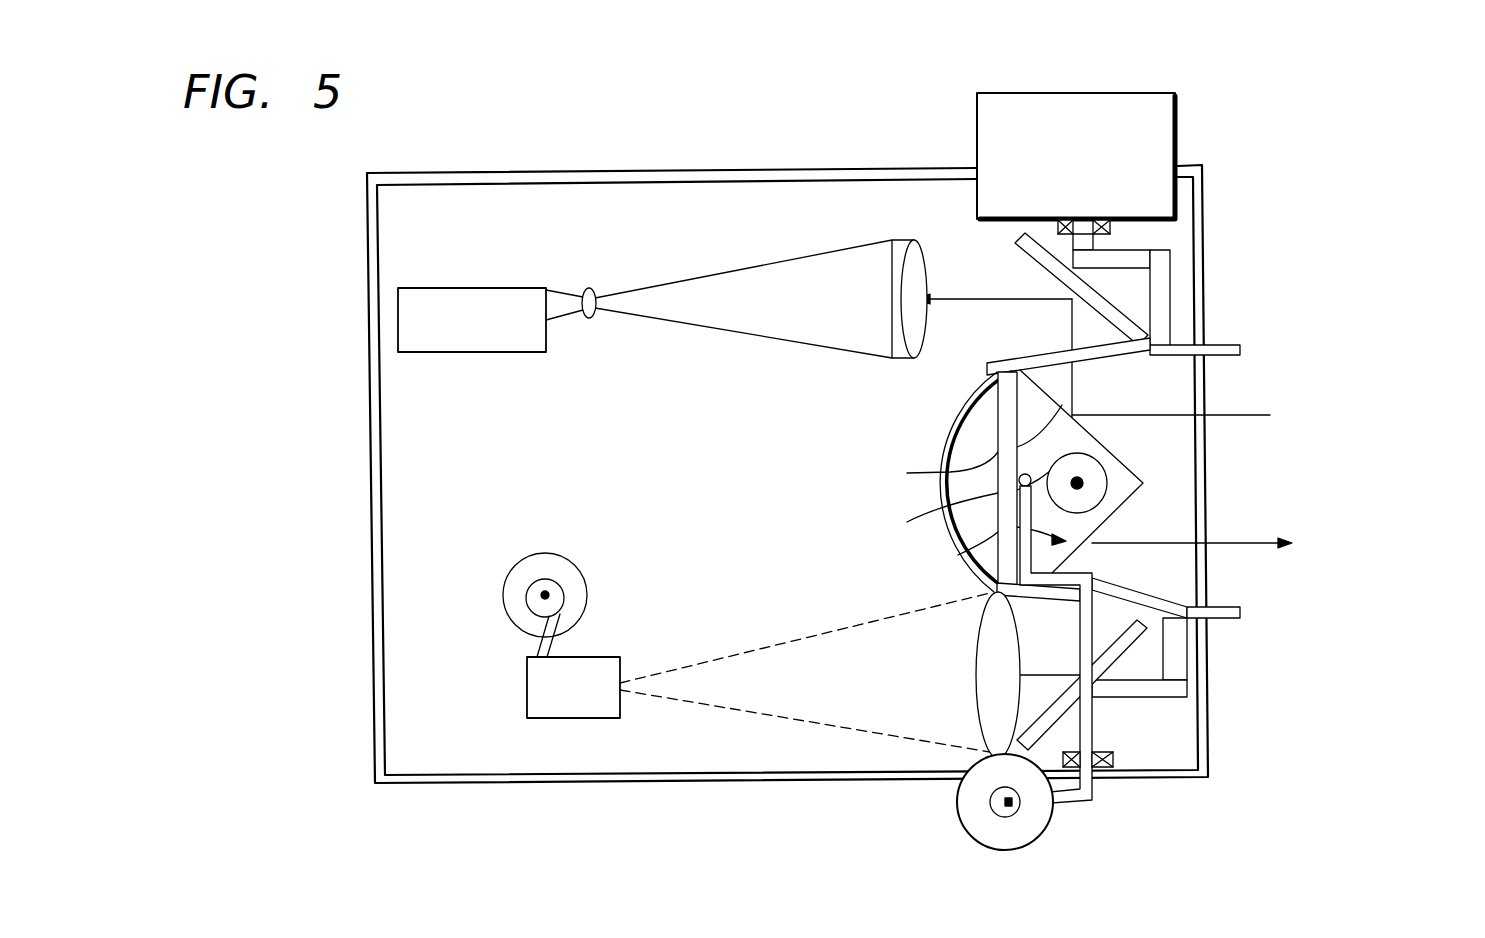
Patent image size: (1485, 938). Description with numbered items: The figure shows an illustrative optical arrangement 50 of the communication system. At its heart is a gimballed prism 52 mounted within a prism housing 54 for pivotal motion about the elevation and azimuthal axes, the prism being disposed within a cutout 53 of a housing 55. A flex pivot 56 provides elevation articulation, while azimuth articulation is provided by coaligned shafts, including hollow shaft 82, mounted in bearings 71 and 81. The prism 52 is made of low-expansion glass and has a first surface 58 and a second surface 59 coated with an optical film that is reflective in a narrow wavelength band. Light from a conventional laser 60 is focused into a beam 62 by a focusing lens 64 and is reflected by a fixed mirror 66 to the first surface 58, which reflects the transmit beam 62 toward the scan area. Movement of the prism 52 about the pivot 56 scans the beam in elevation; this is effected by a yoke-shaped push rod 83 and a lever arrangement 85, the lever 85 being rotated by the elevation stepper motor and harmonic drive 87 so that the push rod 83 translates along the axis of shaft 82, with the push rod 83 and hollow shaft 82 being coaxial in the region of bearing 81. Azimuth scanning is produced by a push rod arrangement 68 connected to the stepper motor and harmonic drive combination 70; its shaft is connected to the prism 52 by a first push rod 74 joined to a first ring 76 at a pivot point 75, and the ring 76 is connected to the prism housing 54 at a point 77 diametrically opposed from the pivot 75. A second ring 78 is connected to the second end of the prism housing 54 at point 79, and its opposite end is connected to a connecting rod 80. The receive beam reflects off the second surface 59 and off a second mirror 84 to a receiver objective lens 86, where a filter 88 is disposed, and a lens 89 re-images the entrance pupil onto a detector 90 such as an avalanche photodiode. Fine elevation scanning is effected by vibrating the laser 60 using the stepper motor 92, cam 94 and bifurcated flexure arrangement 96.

The arrangement 50 is at (1236, 68).
The gimballed prism 52 is at (1063, 437).
The cutout 53 is at (960, 410).
The prism housing 54 is at (967, 499).
The housing 55 is at (1206, 738).
The flex pivot 56 is at (1080, 486).
The first surface 58 is at (962, 560).
The second surface 59 is at (967, 447).
The conventional laser 60 is at (565, 718).
The beam 62 is at (1237, 543).
The focusing lens 64 is at (982, 731).
The fixed mirror 66 is at (1040, 712).
The push rod arrangement 68 is at (1184, 262).
The stepper motor and harmonic drive combination 70 is at (977, 102).
The bearings 71 is at (1112, 227).
The first push rod 74 is at (1170, 295).
The pivot point 75 is at (1195, 335).
The first ring 76 is at (1090, 370).
The point 77 is at (980, 365).
The second ring 78 is at (1123, 592).
The point 79 is at (982, 628).
The connecting rod 80 is at (1197, 657).
The bearings 81 is at (1117, 766).
The hollow shaft 82 is at (1087, 722).
The push rod 83 is at (1093, 730).
The second mirror 84 is at (1048, 270).
The lever arrangement 85 is at (1085, 806).
The receiver objective lens 86 is at (927, 273).
The elevation stepper motor and harmonic drive 87 is at (1048, 848).
The filter 88 is at (892, 298).
The lens 89 is at (590, 288).
The detector 90 is at (530, 287).
The stepper motor 92 is at (540, 553).
The cam 94 is at (565, 598).
The bifurcated flexure arrangement 96 is at (527, 665).